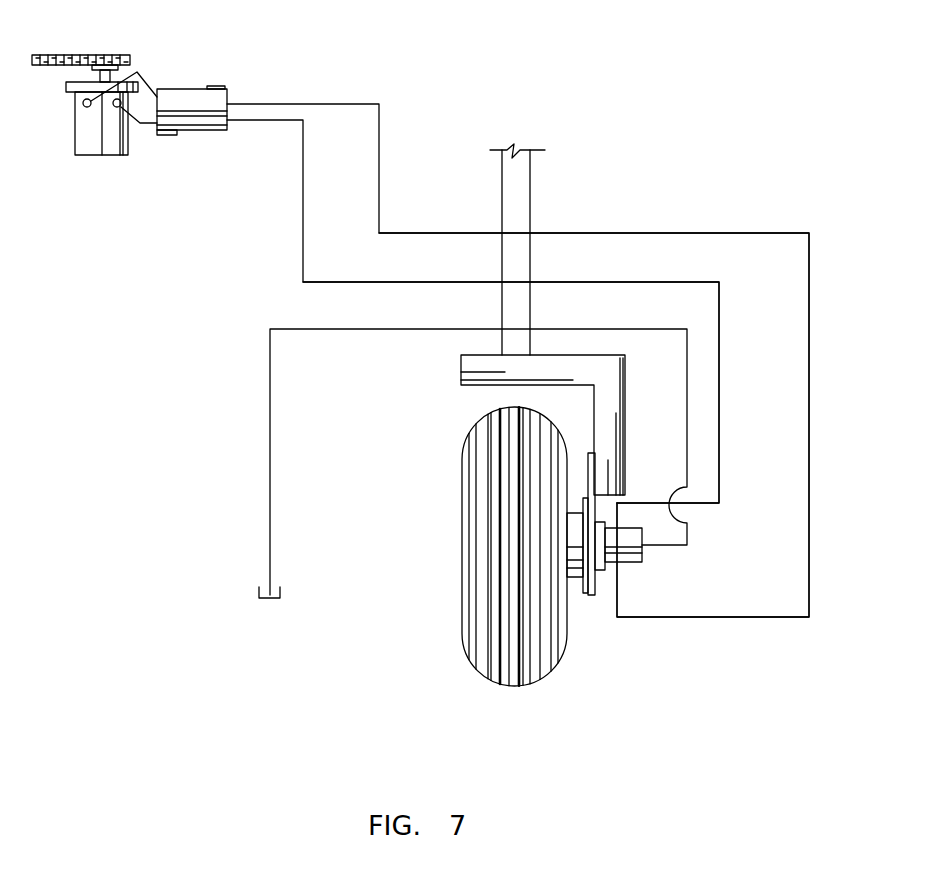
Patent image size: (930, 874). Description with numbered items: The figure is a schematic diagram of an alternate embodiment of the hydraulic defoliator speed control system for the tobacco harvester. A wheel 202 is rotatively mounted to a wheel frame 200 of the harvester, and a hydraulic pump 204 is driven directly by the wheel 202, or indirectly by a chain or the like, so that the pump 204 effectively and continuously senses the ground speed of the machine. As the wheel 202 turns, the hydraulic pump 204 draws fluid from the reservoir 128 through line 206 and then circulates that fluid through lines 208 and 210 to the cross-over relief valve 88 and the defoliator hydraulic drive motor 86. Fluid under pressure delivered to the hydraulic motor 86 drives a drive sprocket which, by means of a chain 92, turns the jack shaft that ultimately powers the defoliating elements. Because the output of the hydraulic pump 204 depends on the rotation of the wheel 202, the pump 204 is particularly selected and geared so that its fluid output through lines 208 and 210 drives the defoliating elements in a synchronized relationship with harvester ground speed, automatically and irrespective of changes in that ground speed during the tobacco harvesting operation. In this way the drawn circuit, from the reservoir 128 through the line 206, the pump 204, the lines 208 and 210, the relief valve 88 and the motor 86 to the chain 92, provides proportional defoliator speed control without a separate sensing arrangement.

The defoliator hydraulic drive motor 86 is at (93, 143).
The cross-over relief valve 88 is at (205, 103).
The chain 92 is at (90, 55).
The reservoir 128 is at (280, 592).
The wheel frame 200 is at (612, 402).
The wheel 202 is at (470, 620).
The hydraulic pump 204 is at (650, 558).
The line 206 is at (687, 417).
The line 208 is at (720, 437).
The line 210 is at (809, 498).